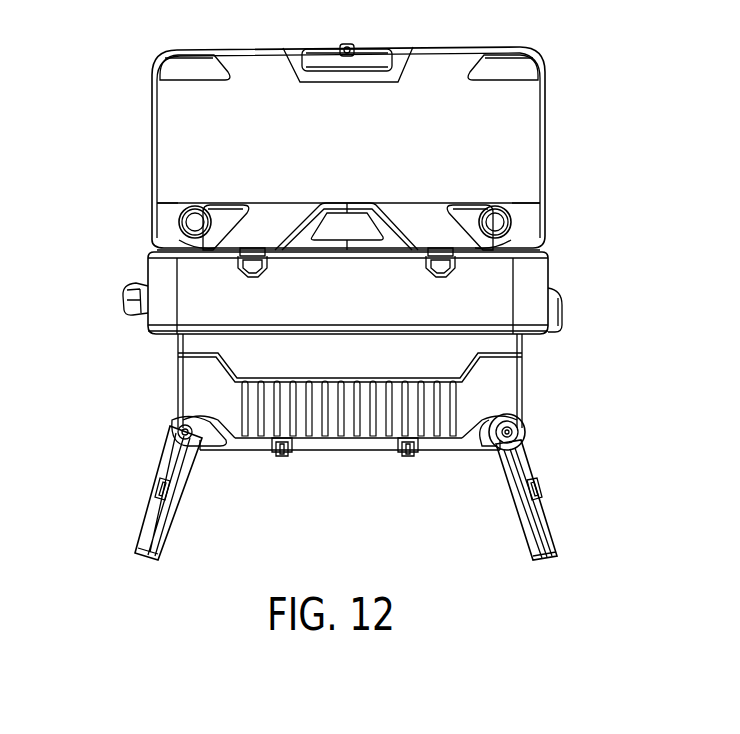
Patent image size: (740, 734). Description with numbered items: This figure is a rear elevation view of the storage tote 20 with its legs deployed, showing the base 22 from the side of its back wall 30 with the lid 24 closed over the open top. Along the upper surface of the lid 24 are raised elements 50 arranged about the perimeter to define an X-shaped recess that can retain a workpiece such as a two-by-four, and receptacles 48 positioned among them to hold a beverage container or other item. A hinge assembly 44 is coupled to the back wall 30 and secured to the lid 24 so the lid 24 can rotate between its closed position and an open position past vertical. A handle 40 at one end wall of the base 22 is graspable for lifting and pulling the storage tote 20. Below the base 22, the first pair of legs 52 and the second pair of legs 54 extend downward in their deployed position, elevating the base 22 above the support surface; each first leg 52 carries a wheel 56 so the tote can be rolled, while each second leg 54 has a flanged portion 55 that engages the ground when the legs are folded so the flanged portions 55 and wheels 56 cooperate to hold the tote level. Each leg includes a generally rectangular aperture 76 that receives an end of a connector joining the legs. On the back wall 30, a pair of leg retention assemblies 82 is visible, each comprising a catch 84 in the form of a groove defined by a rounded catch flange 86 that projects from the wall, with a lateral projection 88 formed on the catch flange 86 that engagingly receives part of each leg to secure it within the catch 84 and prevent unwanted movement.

The storage tote 20 is at (558, 114).
The base 22 is at (552, 268).
The lid 24 is at (422, 92).
The back wall 30 is at (362, 372).
The handle 40 is at (128, 295).
The hinge assembly 44 is at (431, 281).
The receptacle 48 is at (195, 214).
The raised element 50 is at (203, 68).
The first pair of legs 52 is at (522, 547).
The second pair of legs 54 is at (168, 547).
The flanged portion 55 is at (176, 431).
The wheel 56 is at (527, 432).
The aperture 76 is at (168, 498).
The leg retention assembly 82 is at (342, 506).
The catch 84 is at (288, 468).
The catch flange 86 is at (273, 449).
The lateral projection 88 is at (283, 454).